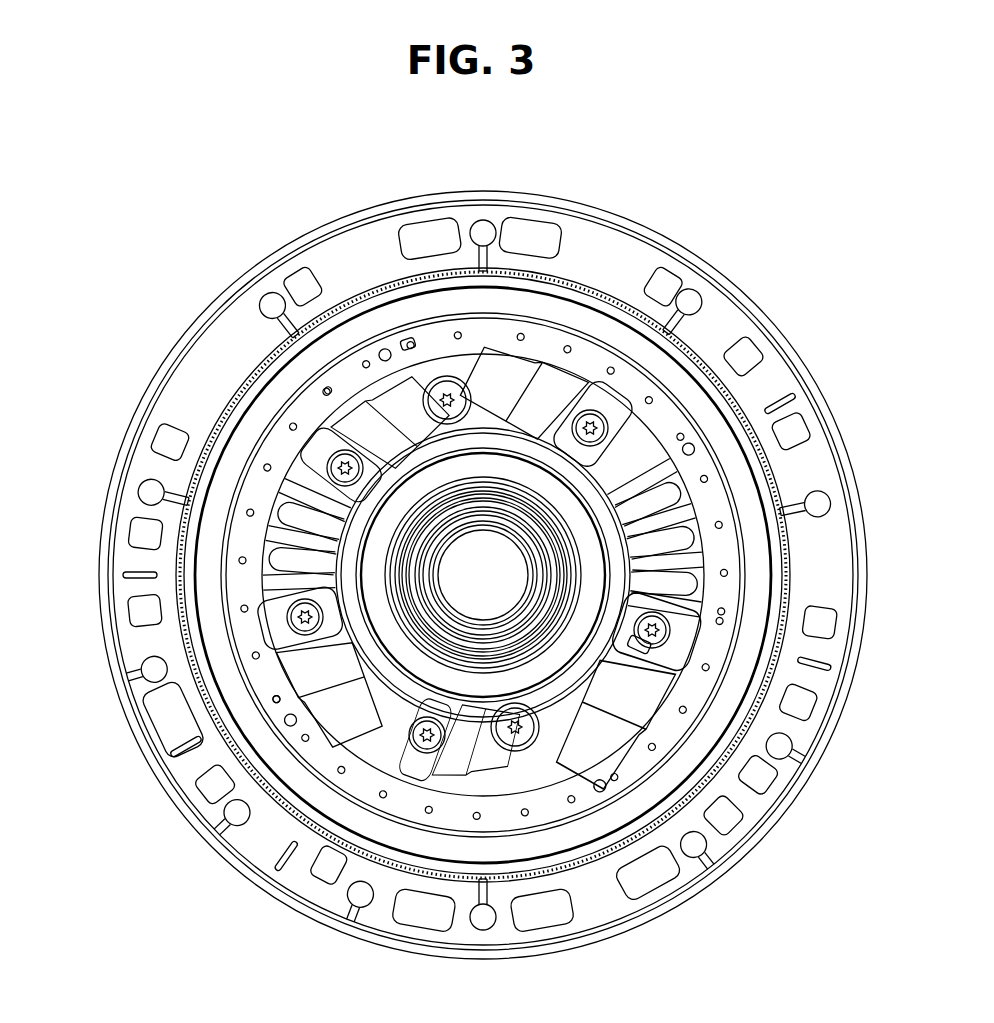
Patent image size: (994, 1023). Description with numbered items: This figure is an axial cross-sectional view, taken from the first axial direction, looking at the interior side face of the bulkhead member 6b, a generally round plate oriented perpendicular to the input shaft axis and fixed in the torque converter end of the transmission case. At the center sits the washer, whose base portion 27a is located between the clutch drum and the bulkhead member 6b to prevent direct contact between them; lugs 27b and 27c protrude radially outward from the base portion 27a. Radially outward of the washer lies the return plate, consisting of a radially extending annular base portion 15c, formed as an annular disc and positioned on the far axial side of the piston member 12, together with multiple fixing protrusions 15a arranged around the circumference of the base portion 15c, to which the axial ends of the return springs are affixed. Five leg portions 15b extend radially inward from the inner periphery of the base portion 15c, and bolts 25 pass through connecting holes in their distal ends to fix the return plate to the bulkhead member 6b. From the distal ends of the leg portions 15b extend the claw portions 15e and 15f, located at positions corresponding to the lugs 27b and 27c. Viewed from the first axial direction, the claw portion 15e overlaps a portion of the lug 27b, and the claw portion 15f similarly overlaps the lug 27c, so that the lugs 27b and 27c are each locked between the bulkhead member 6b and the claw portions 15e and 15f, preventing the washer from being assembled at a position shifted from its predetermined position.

The bulkhead member 6b is at (642, 226).
The piston member 12 is at (523, 303).
The fixing protrusions 15a is at (325, 388).
The leg portions 15b is at (374, 400).
The base portion 15c is at (347, 365).
The claw portion 15e is at (408, 340).
The claw portion 15f is at (668, 690).
The bolts 25 is at (597, 418).
The base portion 27a is at (487, 440).
The lug 27b is at (428, 378).
The lug 27c is at (588, 645).